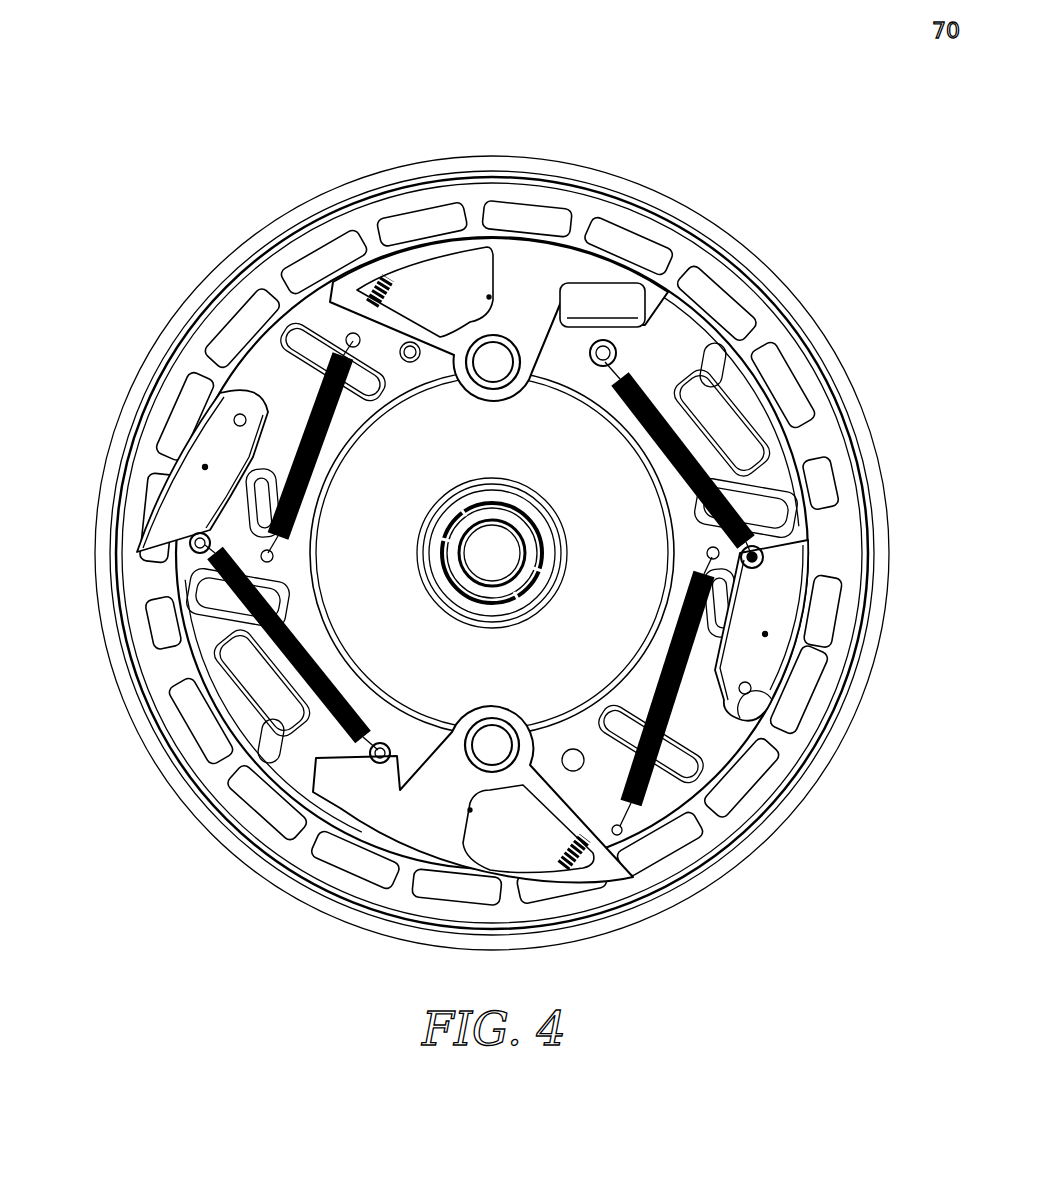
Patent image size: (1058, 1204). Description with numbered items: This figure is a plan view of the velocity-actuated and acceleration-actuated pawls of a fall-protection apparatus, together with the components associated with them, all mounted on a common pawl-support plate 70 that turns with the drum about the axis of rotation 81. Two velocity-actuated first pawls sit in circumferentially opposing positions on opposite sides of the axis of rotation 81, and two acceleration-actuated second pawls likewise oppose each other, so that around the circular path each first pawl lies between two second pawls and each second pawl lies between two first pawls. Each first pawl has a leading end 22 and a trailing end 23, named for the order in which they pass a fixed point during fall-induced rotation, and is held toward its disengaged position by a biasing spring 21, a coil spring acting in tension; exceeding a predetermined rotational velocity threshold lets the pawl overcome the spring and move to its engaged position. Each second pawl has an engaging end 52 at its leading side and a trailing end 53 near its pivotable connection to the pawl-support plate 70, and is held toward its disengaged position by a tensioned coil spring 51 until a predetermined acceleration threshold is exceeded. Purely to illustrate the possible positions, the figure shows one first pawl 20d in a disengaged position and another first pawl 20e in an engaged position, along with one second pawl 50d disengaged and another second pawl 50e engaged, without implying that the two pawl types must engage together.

The pawl-support plate 70 is at (637, 192).
The axis of rotation 81 is at (489, 553).
The second pawl in disengaged position 50d is at (516, 268).
The second pawl in engaged position 50e is at (415, 815).
The engaging end 52 is at (335, 290).
The trailing end 53 is at (650, 292).
The biasing spring 21 is at (700, 448).
The leading end 22 is at (790, 548).
The trailing end 23 is at (780, 720).
The first pawl in disengaged position 20d is at (775, 617).
The first pawl in engaged position 20e is at (185, 468).
The coil spring 51 is at (675, 690).